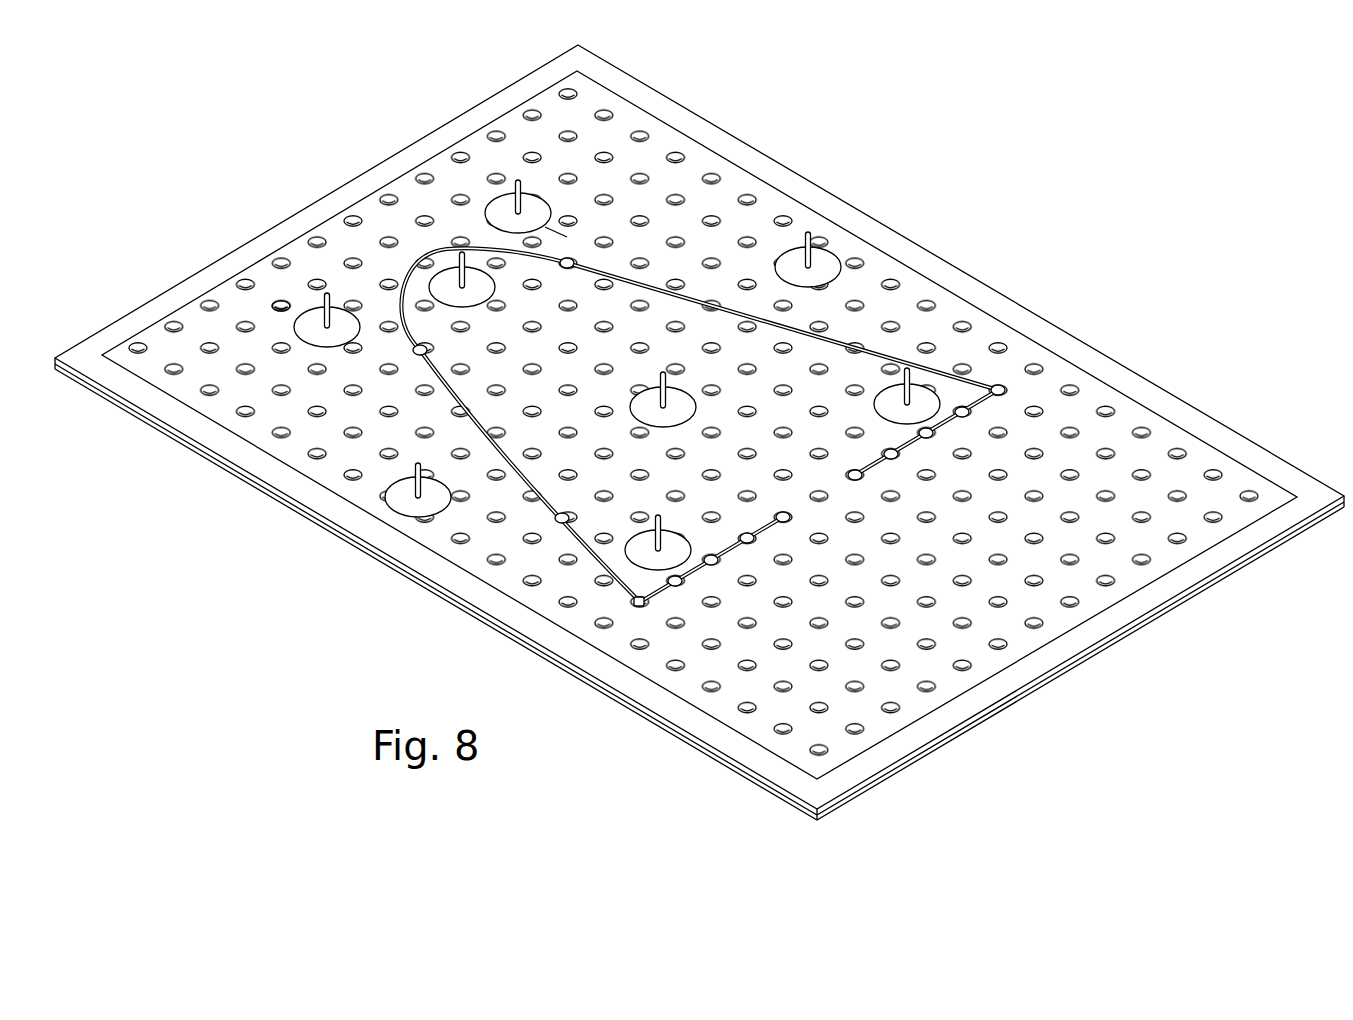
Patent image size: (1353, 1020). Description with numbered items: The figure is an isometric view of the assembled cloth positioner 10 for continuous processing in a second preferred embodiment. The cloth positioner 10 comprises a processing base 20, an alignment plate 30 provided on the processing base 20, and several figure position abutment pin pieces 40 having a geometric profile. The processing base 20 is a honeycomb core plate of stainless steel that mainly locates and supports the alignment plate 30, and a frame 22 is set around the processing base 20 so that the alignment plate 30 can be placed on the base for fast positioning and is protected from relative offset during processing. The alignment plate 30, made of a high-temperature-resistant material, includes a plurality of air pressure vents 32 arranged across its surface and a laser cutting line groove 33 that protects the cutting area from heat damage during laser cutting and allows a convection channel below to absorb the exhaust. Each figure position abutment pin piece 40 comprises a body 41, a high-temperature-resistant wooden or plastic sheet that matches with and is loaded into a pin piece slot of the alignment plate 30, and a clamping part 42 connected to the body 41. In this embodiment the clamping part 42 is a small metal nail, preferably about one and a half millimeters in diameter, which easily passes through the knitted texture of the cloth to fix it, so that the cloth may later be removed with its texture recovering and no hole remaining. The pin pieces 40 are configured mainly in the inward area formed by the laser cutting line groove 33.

The cloth positioner 10 is at (699, 432).
The processing base 20 is at (330, 541).
The frame 22 is at (316, 493).
The alignment plate 30 is at (693, 422).
The air pressure vents 32 is at (280, 302).
The laser cutting line groove 33 is at (648, 284).
The figure position abutment pin piece 40 is at (617, 348).
The body 41 is at (800, 248).
The clamping part 42 is at (811, 230).